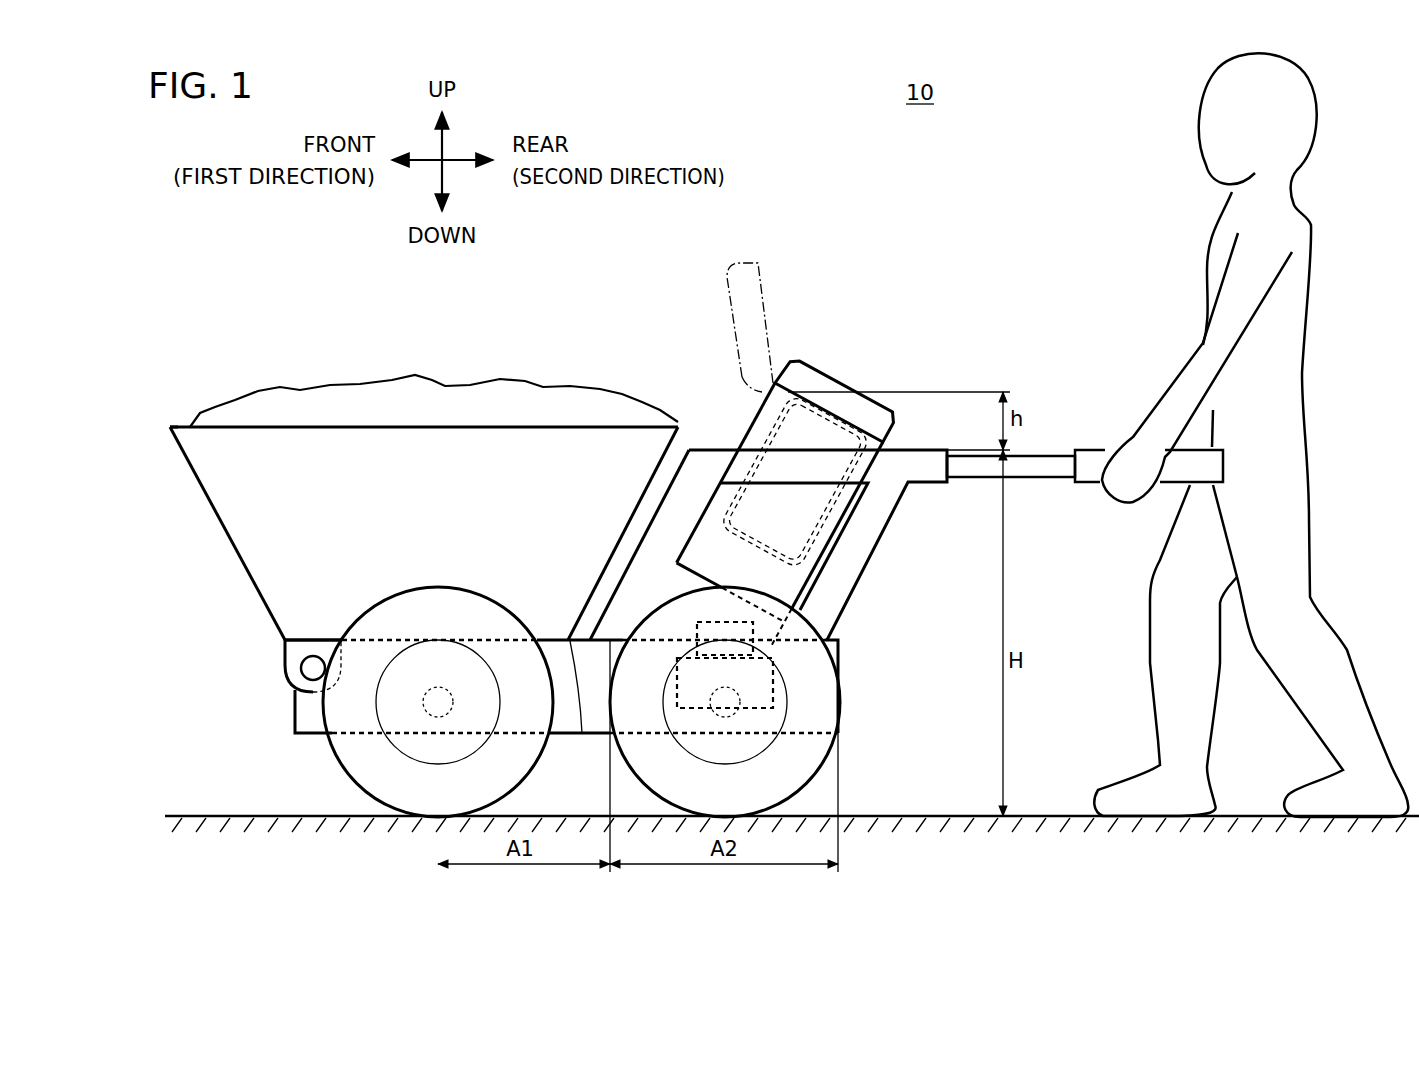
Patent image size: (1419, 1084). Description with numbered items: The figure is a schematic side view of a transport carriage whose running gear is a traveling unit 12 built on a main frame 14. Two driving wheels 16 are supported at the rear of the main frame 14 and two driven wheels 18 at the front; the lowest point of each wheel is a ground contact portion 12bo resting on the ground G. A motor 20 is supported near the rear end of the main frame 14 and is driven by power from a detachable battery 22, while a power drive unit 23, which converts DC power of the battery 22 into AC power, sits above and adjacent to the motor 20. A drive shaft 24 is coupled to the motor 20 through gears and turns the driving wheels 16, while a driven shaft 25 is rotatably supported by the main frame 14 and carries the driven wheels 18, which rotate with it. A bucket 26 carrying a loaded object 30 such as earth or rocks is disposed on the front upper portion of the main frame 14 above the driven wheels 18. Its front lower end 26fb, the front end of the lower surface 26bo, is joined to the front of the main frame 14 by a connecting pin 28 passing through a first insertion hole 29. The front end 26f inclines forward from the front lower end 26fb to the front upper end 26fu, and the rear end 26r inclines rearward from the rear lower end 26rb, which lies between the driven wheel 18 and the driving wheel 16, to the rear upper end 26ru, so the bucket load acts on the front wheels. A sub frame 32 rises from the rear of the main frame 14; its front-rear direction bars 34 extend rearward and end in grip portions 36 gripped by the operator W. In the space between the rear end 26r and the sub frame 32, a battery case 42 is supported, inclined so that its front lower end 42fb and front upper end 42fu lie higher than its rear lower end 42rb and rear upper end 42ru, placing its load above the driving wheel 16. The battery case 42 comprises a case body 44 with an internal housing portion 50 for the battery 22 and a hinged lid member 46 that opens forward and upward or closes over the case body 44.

The traveling unit 12 is at (868, 697).
The ground contact portion 12bo is at (446, 820).
The main frame 14 is at (302, 718).
The driving wheel 16 is at (808, 748).
The driven wheel 18 is at (352, 752).
The motor 20 is at (755, 706).
The detachable battery 22 is at (828, 545).
The power drive unit 23 is at (716, 622).
The drive shaft 24 is at (732, 712).
The driven shaft 25 is at (430, 703).
The bucket 26 is at (431, 567).
The front end of bucket 26f is at (188, 462).
The front upper end of bucket 26fu is at (172, 426).
The front lower end of bucket 26fb is at (283, 645).
The rear end of bucket 26r is at (640, 507).
The rear upper end of bucket 26ru is at (682, 425).
The rear lower end of bucket 26rb is at (582, 735).
The lower surface of bucket 26bo is at (540, 652).
The connecting pin 28 is at (314, 655).
The first insertion hole 29 is at (300, 669).
The loaded object 30 is at (300, 395).
The sub frame 32 is at (857, 592).
The front-rear direction bar 34 is at (1050, 479).
The grip portion 36 is at (1090, 448).
The battery case 42 is at (746, 471).
The front upper end of battery case 42fu is at (726, 473).
The front lower end of battery case 42fb is at (700, 575).
The rear upper end of battery case 42ru is at (837, 525).
The rear lower end of battery case 42rb is at (750, 612).
The case body 44 is at (783, 327).
The lid member 46 is at (836, 399).
The housing portion 50 is at (795, 481).
The ground G is at (968, 814).
The operator W is at (1295, 301).